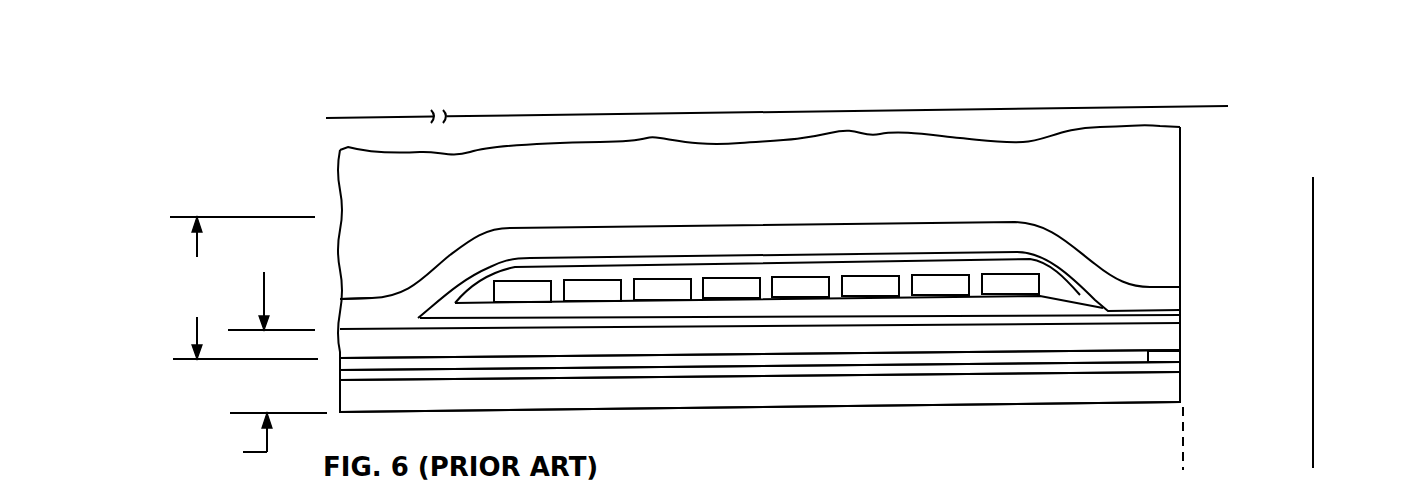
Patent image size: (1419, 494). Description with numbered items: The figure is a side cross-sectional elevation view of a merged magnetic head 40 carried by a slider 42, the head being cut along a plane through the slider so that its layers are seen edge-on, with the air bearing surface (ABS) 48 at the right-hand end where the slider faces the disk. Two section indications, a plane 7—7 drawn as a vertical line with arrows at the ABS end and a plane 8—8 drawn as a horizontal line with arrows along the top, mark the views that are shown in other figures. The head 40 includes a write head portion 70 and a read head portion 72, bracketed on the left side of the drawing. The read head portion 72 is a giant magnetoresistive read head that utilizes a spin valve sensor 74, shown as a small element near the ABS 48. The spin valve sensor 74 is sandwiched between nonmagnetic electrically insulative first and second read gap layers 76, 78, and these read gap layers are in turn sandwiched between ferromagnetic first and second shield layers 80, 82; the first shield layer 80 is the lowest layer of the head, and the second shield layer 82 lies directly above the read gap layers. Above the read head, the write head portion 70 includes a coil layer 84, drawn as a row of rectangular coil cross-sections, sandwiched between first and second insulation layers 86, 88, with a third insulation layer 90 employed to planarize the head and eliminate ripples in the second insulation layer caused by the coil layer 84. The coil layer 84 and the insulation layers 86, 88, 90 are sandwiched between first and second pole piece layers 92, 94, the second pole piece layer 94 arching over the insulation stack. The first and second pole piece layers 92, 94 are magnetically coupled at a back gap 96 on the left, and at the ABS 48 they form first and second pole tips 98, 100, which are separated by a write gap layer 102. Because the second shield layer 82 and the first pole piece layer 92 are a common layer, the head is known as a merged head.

The plane 7- 7 is at (1330, 197).
The plane 8- 8 is at (347, 102).
The magnetic head 40 is at (305, 161).
The slider 42 is at (1158, 157).
The air bearing surface 48 is at (1183, 422).
The write head portion 70 is at (219, 288).
The read head portion 72 is at (223, 438).
The spin valve sensor 74 is at (1175, 357).
The first read gap layer 76 is at (827, 373).
The second read gap layer 78 is at (793, 352).
The first shield layer 80 is at (925, 387).
The second shield layer 82 is at (1022, 335).
The coil layer 84 is at (802, 287).
The first insulation layer 86 is at (715, 310).
The second insulation layer 88 is at (1057, 285).
The third insulation layer 90 is at (521, 262).
The first pole piece layer 92 is at (1023, 418).
The second pole piece layer 94 is at (926, 227).
The back gap 96 is at (366, 317).
The first pole tip 98 is at (1183, 334).
The second pole tip 100 is at (1173, 298).
The write gap layer 102 is at (1182, 313).